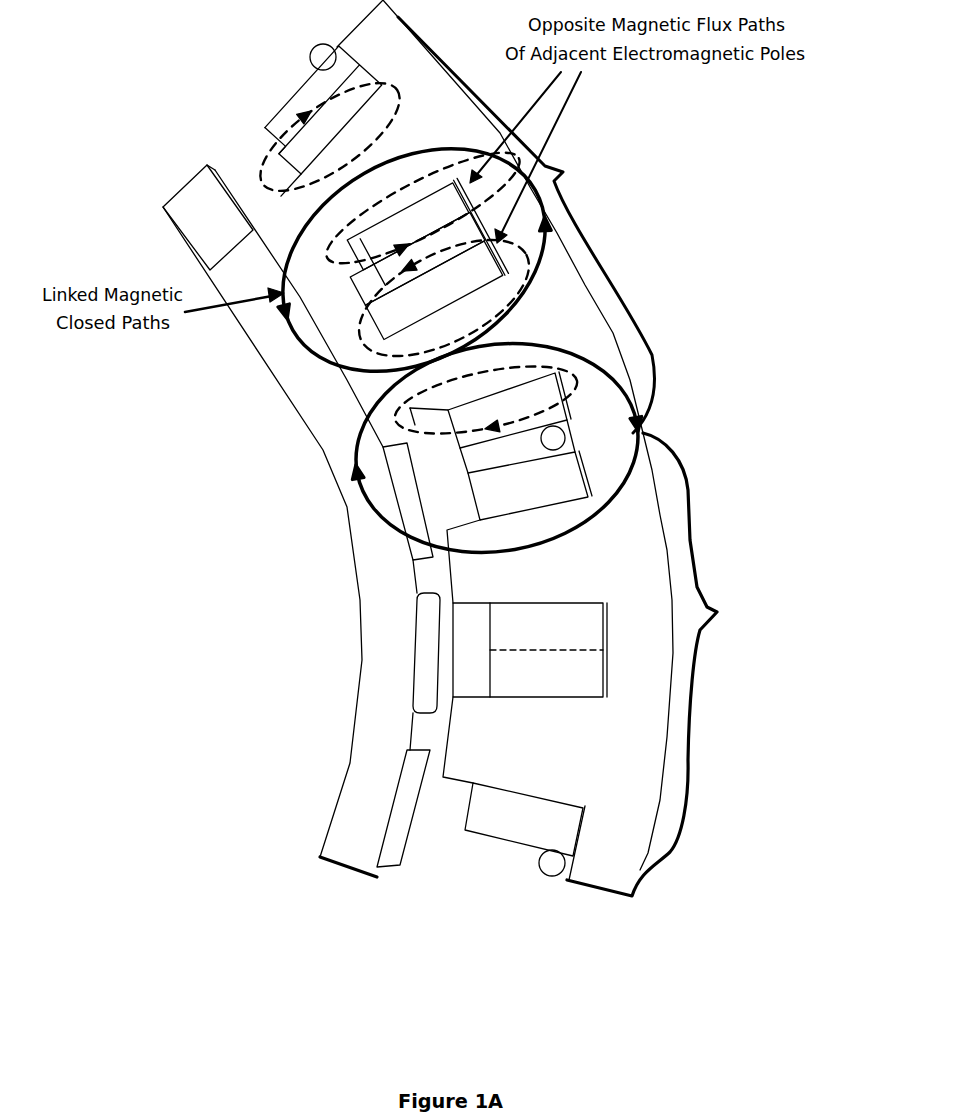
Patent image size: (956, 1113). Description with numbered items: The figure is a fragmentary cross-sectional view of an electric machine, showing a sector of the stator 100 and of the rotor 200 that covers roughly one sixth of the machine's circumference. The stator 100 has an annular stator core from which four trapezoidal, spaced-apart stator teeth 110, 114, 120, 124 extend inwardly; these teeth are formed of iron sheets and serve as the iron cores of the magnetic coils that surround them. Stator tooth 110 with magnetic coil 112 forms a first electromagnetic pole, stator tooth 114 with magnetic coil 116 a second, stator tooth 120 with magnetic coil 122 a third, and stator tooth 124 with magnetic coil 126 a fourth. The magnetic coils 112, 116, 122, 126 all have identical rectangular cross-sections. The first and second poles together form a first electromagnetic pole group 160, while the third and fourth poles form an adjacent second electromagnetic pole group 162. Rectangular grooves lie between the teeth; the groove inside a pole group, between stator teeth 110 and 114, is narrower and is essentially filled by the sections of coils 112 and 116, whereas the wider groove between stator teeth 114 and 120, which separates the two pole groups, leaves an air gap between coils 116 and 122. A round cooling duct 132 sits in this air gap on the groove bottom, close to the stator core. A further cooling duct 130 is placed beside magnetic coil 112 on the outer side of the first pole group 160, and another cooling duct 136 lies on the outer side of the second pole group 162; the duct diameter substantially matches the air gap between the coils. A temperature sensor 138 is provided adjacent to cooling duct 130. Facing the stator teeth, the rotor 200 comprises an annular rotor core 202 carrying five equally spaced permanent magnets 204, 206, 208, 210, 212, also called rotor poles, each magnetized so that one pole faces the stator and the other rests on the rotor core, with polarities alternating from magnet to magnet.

The stator 100 is at (730, 288).
The stator tooth 110 is at (398, 189).
The magnetic coil 112 is at (280, 176).
The stator tooth 114 is at (500, 361).
The magnetic coil 116 is at (385, 293).
The stator tooth 120 is at (548, 579).
The magnetic coil 122 is at (468, 487).
The stator tooth 124 is at (553, 768).
The magnetic coil 126 is at (493, 650).
The cooling duct 130 is at (328, 43).
The cooling duct 132 is at (541, 437).
The cooling duct 136 is at (540, 877).
The temperature sensor 138 is at (300, 80).
The first electromagnetic pole group 160 is at (681, 157).
The second electromagnetic pole group 162 is at (800, 643).
The rotor 200 is at (250, 429).
The rotor core 202 is at (350, 523).
The permanent magnet 204 is at (250, 228).
The permanent magnet 206 is at (346, 370).
The permanent magnet 208 is at (392, 485).
The permanent magnet 210 is at (415, 650).
The permanent magnet 212 is at (410, 748).